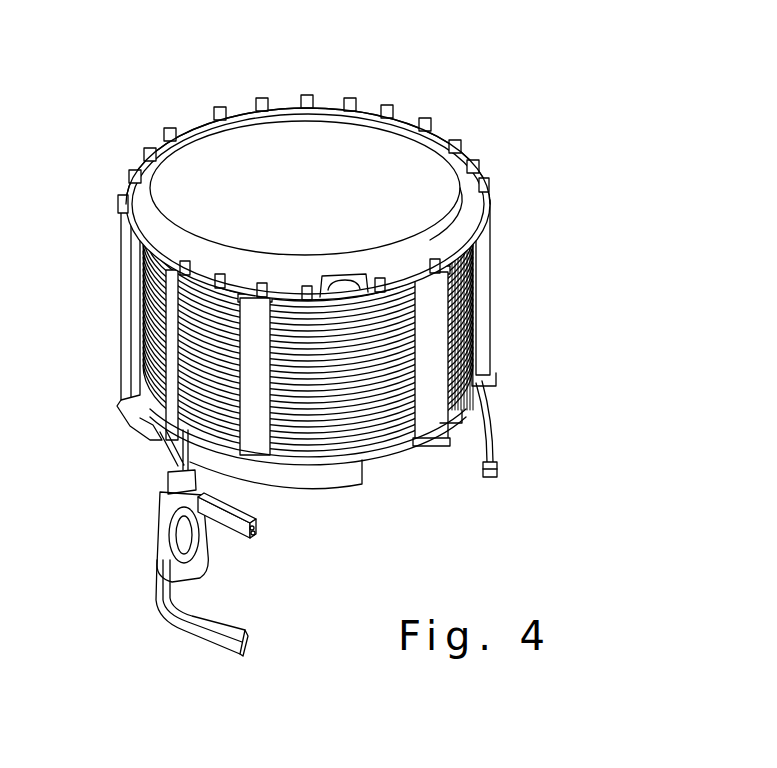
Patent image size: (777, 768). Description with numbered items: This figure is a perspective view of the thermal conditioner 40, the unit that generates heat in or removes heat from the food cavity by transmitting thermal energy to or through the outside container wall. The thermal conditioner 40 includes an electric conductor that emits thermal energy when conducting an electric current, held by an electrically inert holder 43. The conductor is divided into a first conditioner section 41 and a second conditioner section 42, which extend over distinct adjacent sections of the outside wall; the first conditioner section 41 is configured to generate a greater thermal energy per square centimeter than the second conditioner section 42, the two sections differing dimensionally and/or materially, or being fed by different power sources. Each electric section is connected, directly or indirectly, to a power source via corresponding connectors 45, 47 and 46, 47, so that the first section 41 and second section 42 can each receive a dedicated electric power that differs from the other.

The thermal conditioner 40 is at (538, 122).
The first conditioner section 41 is at (455, 363).
The second conditioner section 42 is at (462, 265).
The electrically inert holder 43 is at (165, 146).
The connector 45 is at (257, 536).
The connector 46 is at (246, 632).
The connector 47 is at (506, 468).